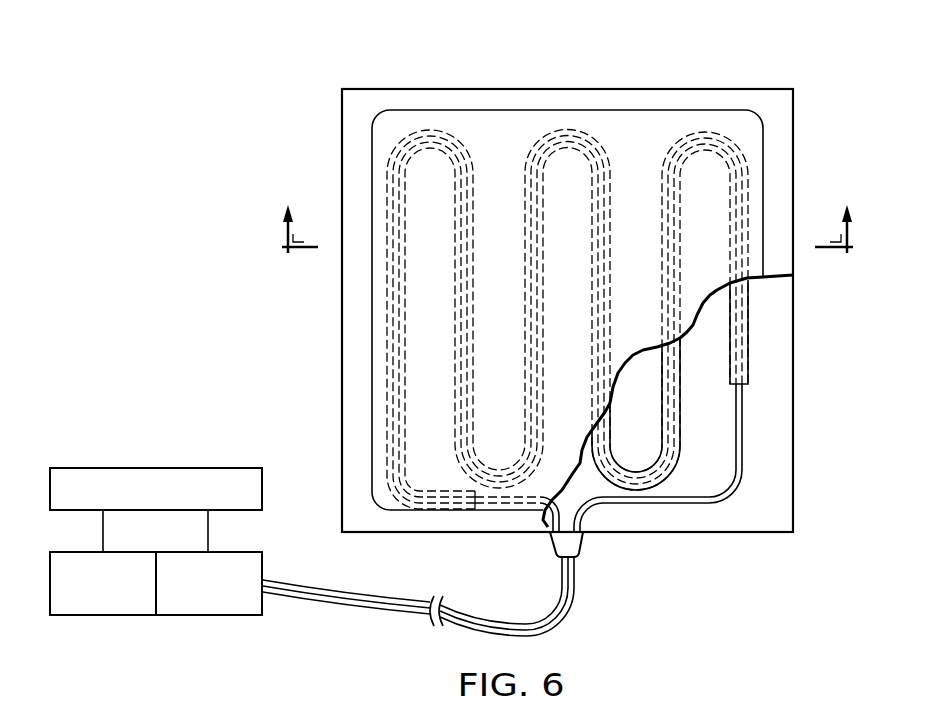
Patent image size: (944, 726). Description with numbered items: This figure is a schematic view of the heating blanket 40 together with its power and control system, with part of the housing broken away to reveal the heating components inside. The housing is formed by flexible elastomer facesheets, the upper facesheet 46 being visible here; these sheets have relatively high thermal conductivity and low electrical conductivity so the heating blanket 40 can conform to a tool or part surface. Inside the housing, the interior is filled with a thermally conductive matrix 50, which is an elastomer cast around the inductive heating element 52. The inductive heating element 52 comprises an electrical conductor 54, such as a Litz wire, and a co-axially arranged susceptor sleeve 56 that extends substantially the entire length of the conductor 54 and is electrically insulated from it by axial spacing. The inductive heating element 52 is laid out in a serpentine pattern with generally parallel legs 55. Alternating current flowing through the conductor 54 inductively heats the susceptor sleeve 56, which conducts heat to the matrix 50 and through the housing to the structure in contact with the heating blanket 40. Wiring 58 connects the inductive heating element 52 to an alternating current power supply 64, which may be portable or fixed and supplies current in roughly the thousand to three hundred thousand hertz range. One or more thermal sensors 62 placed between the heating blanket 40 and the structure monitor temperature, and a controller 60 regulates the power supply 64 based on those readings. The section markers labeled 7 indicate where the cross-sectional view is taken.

The heating blanket 40 is at (166, 230).
The upper facesheet 46 is at (568, 98).
The section line for FIG. 7 is at (568, 213).
The legs 55 is at (387, 318).
The susceptor sleeve 56 is at (748, 340).
The electrical conductor 54 is at (742, 425).
The thermally conductive matrix 50 is at (699, 488).
The inductive heating element 52 is at (768, 316).
The wiring 58 is at (577, 573).
The controller 60 is at (155, 467).
The thermal sensors 62 is at (92, 608).
The alternating current power supply 64 is at (170, 608).